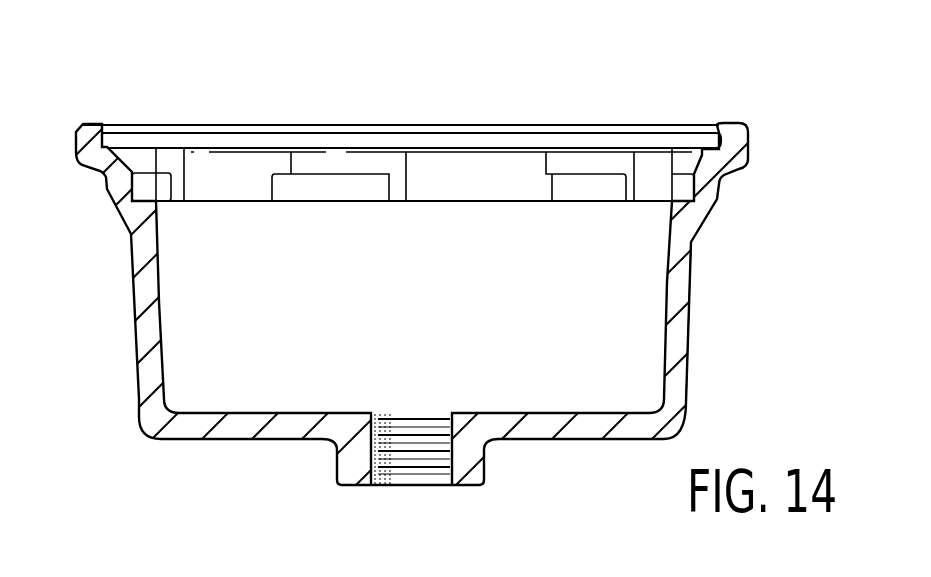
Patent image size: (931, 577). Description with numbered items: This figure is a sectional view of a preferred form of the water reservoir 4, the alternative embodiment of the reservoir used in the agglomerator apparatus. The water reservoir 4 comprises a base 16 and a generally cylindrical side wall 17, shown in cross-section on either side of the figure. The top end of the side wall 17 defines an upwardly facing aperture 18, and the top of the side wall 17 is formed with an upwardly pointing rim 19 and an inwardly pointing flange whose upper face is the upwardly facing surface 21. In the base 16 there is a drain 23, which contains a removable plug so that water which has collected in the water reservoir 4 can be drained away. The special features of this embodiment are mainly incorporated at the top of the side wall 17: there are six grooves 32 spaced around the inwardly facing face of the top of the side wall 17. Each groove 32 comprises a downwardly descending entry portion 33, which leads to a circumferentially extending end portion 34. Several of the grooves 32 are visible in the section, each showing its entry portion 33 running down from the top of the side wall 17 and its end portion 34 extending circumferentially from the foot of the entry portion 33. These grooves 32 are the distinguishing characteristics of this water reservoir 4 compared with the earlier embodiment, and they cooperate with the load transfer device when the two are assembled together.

The water reservoir 4 is at (708, 313).
The base 16 is at (560, 440).
The side wall 17 is at (689, 377).
The upwardly facing aperture 18 is at (539, 105).
The rim 19 is at (734, 125).
The upwardly facing surface 21 is at (690, 152).
The drain 23 is at (398, 420).
The groove 32 is at (241, 105).
The entry portion 33 is at (240, 190).
The end portion 34 is at (170, 190).